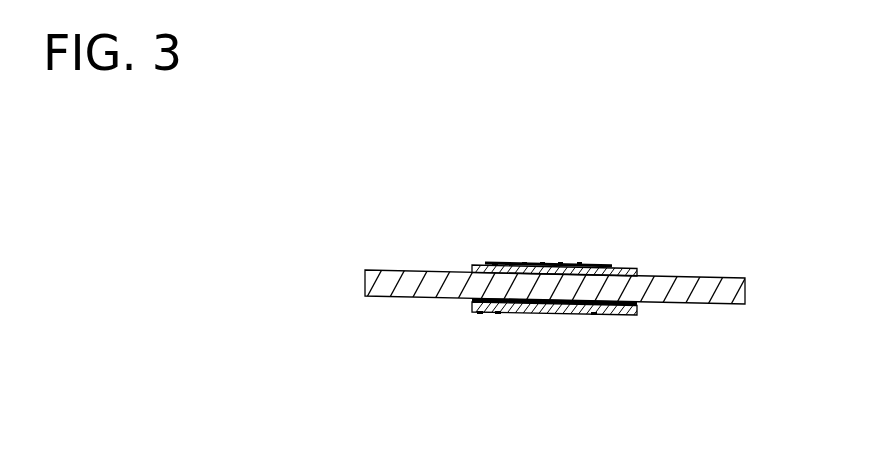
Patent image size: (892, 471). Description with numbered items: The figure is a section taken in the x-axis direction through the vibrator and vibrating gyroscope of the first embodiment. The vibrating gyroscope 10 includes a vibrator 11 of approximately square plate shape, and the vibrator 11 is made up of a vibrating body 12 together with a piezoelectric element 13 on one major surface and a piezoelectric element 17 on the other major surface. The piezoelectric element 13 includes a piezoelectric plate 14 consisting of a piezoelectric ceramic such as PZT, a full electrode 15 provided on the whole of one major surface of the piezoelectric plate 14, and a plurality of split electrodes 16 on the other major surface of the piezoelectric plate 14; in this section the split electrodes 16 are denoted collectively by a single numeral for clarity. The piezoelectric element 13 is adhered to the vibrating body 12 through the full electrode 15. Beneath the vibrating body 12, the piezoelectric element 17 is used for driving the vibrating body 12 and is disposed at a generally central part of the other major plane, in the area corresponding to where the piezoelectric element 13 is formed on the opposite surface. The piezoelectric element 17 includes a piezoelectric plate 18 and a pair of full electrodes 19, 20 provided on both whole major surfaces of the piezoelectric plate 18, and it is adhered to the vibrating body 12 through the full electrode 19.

The vibrating gyroscope 10 is at (735, 154).
The vibrator 11 is at (681, 276).
The vibrating body 12 is at (640, 252).
The piezoelectric element 13 is at (589, 258).
The piezoelectric plate 14 is at (508, 263).
The full electrode 15 is at (496, 262).
The split electrodes 16 is at (580, 262).
The piezoelectric element 17 is at (553, 322).
The piezoelectric plate 18 is at (498, 314).
The full electrode 19 is at (480, 314).
The full electrode 20 is at (594, 314).